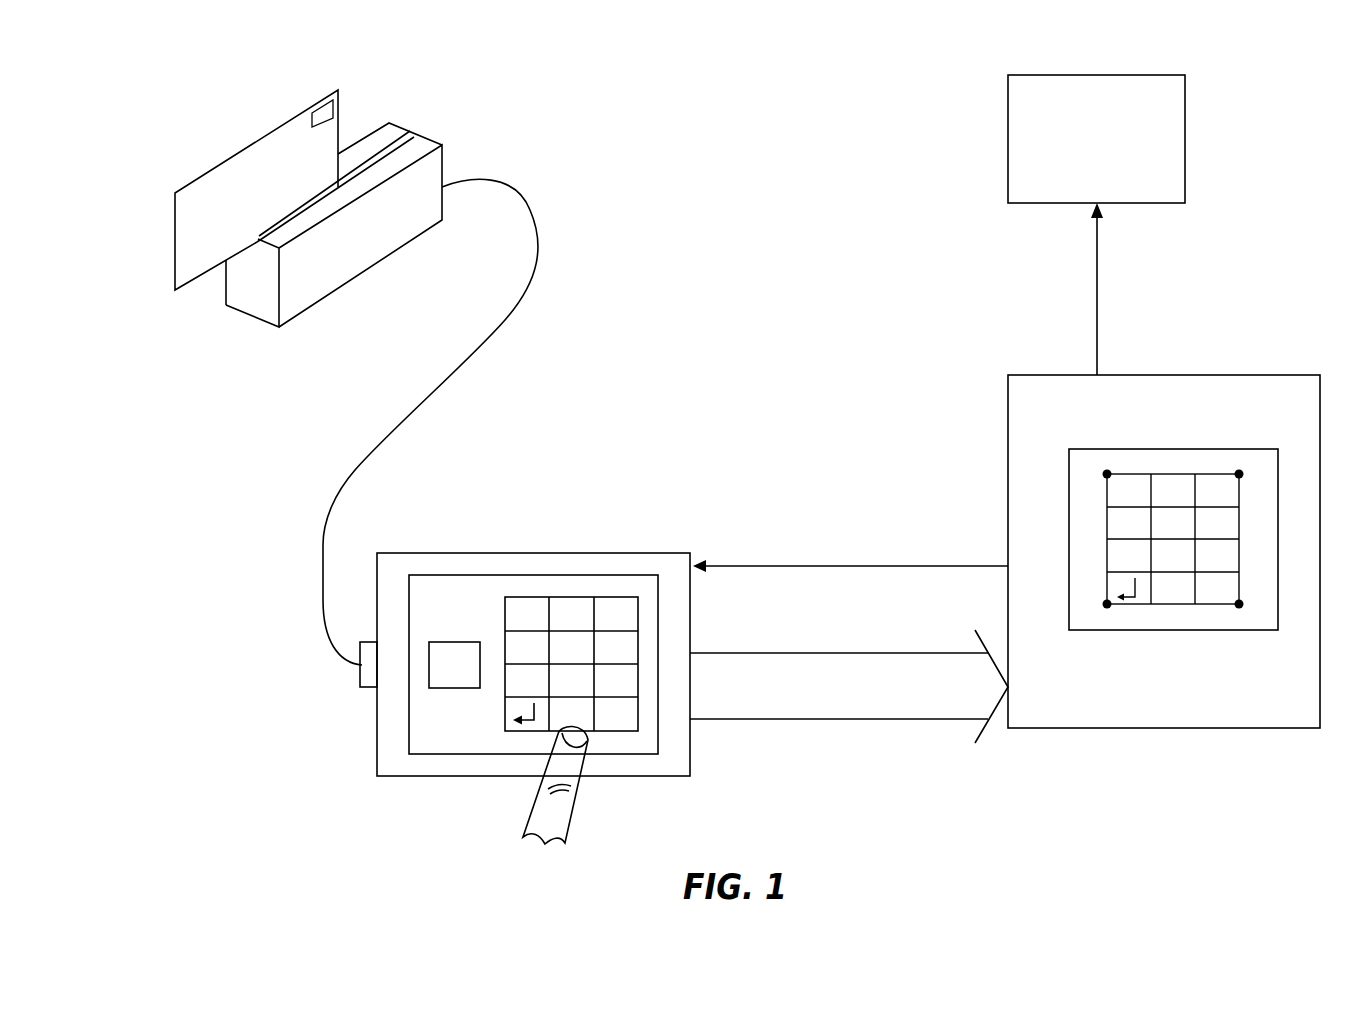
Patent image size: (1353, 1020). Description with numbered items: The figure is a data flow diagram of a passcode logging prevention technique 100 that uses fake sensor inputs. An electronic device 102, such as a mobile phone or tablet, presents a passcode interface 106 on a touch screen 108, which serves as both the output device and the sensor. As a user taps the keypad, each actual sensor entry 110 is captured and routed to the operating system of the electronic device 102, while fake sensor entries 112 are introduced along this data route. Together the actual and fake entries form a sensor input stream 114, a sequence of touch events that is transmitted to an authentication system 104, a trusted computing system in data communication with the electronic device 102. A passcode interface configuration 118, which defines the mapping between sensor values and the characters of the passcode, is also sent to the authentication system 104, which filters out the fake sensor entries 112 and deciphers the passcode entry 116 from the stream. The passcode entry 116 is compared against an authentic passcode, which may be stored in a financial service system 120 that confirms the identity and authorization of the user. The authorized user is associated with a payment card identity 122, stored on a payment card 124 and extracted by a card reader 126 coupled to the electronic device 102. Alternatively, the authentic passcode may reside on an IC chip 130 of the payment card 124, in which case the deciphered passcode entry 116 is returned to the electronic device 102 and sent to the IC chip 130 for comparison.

The passcode logging prevention technique 100 is at (192, 103).
The electronic device 102 is at (553, 655).
The authentication system 104 is at (1164, 534).
The passcode interface 106 is at (622, 597).
The touch screen 108 is at (455, 575).
The actual sensor entry 110 is at (708, 658).
The fake sensor entries 112 is at (830, 657).
The sensor input stream 114 is at (849, 688).
The passcode entry 116 is at (811, 542).
The passcode interface configuration 118 is at (1168, 448).
The financial service system 120 is at (1096, 139).
The payment card identity 122 is at (300, 193).
The payment card 124 is at (299, 174).
The card reader 126 is at (442, 145).
The IC chip 130 is at (317, 117).